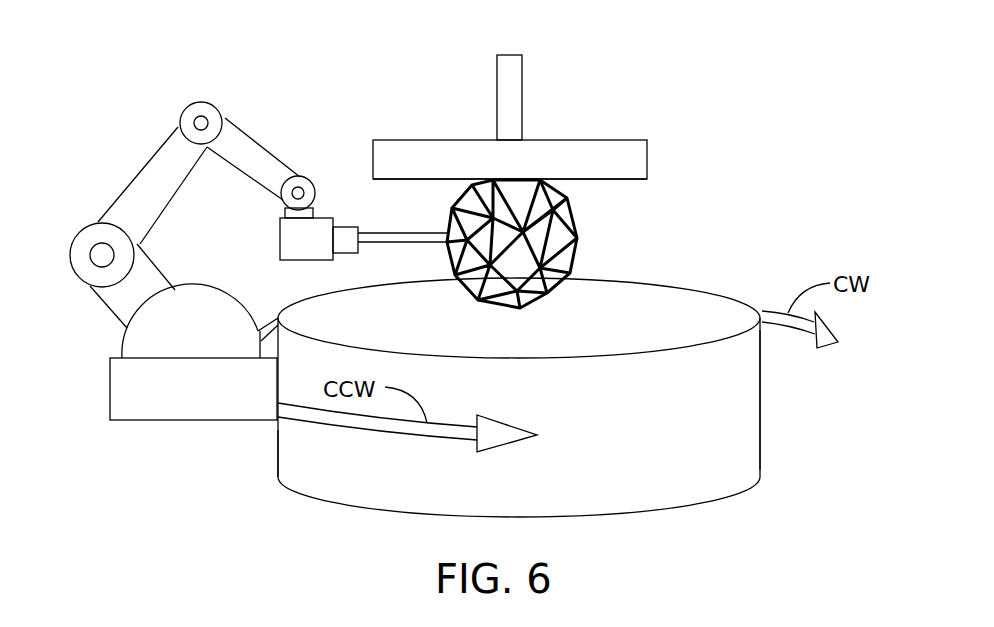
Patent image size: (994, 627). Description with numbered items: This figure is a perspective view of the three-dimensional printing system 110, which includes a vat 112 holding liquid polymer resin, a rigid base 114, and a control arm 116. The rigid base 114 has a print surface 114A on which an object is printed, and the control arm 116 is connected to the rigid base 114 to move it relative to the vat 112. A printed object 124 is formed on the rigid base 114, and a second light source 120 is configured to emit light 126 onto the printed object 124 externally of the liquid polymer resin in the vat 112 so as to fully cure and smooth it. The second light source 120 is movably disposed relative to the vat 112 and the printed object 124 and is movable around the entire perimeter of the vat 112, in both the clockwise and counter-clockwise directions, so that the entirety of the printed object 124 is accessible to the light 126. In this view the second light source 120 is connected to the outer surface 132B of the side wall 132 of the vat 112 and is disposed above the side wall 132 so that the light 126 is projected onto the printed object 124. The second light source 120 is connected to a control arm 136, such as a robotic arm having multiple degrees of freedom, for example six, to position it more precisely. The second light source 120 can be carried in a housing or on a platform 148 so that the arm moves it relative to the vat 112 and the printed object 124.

The 3D printing system 110 is at (262, 58).
The vat 112 is at (270, 455).
The rigid base 114 is at (647, 158).
The print surface 114A is at (597, 180).
The control arm 116 is at (523, 93).
The second light source 120 is at (344, 226).
The printed object 124 is at (573, 243).
The light 126 is at (402, 243).
The side wall 132 is at (685, 467).
The outer surface 132B is at (722, 420).
The control arm 136 is at (138, 167).
The platform 148 is at (278, 240).